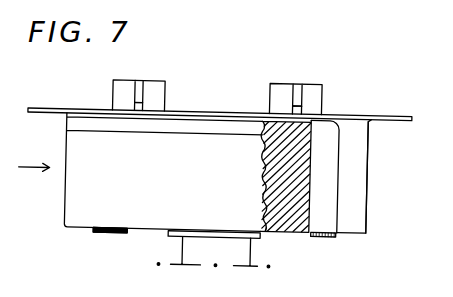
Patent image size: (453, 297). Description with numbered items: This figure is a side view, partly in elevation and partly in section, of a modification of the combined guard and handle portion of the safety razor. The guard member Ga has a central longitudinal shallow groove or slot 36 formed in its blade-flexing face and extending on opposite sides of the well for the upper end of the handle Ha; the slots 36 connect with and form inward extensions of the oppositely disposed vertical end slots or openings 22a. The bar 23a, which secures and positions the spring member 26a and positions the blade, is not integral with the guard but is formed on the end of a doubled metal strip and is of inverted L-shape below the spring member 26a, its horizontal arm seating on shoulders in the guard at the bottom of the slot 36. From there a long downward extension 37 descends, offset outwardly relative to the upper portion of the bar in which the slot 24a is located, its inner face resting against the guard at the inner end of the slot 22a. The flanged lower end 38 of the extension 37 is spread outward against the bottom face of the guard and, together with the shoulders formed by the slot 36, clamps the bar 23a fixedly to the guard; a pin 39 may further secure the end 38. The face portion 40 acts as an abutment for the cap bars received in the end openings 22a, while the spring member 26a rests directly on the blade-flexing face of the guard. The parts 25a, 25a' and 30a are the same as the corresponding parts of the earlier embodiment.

The vertical end slot 22a is at (360, 145).
The spring member securing and blade positioning bar 23a is at (113, 82).
The slot 24a is at (144, 109).
The part 25a is at (308, 82).
The part 25a' is at (335, 87).
The spring member 26a is at (371, 117).
The part 30a is at (82, 140).
The shallow groove or slot 36 is at (267, 120).
The downward extension 37 is at (333, 222).
The flanged lower end 38 is at (93, 231).
The pin 39 is at (110, 232).
The face portion 40 is at (337, 180).
The guard member Ga is at (67, 182).
The handle Ha is at (250, 254).